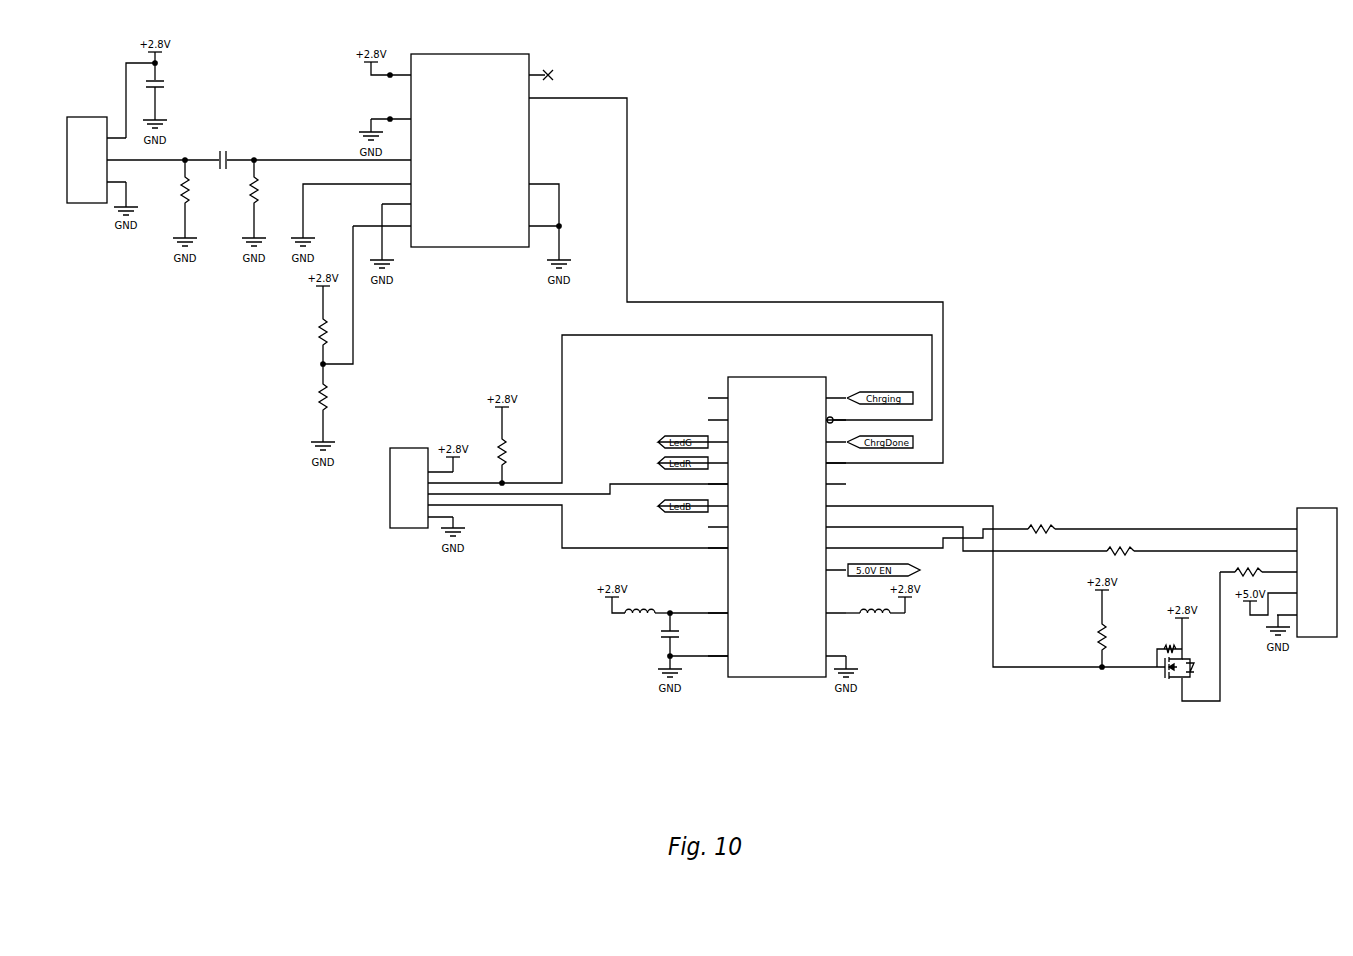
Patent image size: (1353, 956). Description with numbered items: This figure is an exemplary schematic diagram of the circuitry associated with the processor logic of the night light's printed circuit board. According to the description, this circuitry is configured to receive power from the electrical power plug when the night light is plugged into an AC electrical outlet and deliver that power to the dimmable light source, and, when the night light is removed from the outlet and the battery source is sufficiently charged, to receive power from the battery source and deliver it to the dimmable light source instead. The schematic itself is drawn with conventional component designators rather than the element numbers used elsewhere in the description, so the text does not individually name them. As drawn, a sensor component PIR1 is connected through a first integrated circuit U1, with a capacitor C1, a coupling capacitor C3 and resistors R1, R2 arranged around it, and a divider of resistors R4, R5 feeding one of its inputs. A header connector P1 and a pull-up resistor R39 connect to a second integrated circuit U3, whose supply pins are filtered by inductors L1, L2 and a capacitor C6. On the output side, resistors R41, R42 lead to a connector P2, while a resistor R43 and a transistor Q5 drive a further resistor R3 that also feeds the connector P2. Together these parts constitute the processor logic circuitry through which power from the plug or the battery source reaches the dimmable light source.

The PIR sensor PIR1 is at (98, 167).
The capacitor 0.1uF C1 is at (170, 99).
The capacitor 0.47uF C3 is at (225, 162).
The resistor 100k R1 is at (198, 199).
The resistor 2.2M R2 is at (267, 199).
The PIR controller IC E93197A37B U1 is at (474, 151).
The resistor 51k R4 is at (333, 325).
The resistor 100k R5 is at (336, 403).
The header 5H connector P1 is at (425, 489).
The resistor 100k R39 is at (515, 445).
The microcontroller U3 is at (777, 520).
The inductor L1 is at (647, 619).
The capacitor 0.1uF C6 is at (685, 634).
The inductor L2 is at (882, 619).
The resistor 24.9k R41 is at (1162, 528).
The resistor 24.9k R42 is at (1201, 550).
The resistor 100k R43 is at (1115, 628).
The MOSFET transistor Q5 is at (1181, 648).
The resistor 75R R3 is at (1258, 571).
The connector P2 is at (1307, 580).